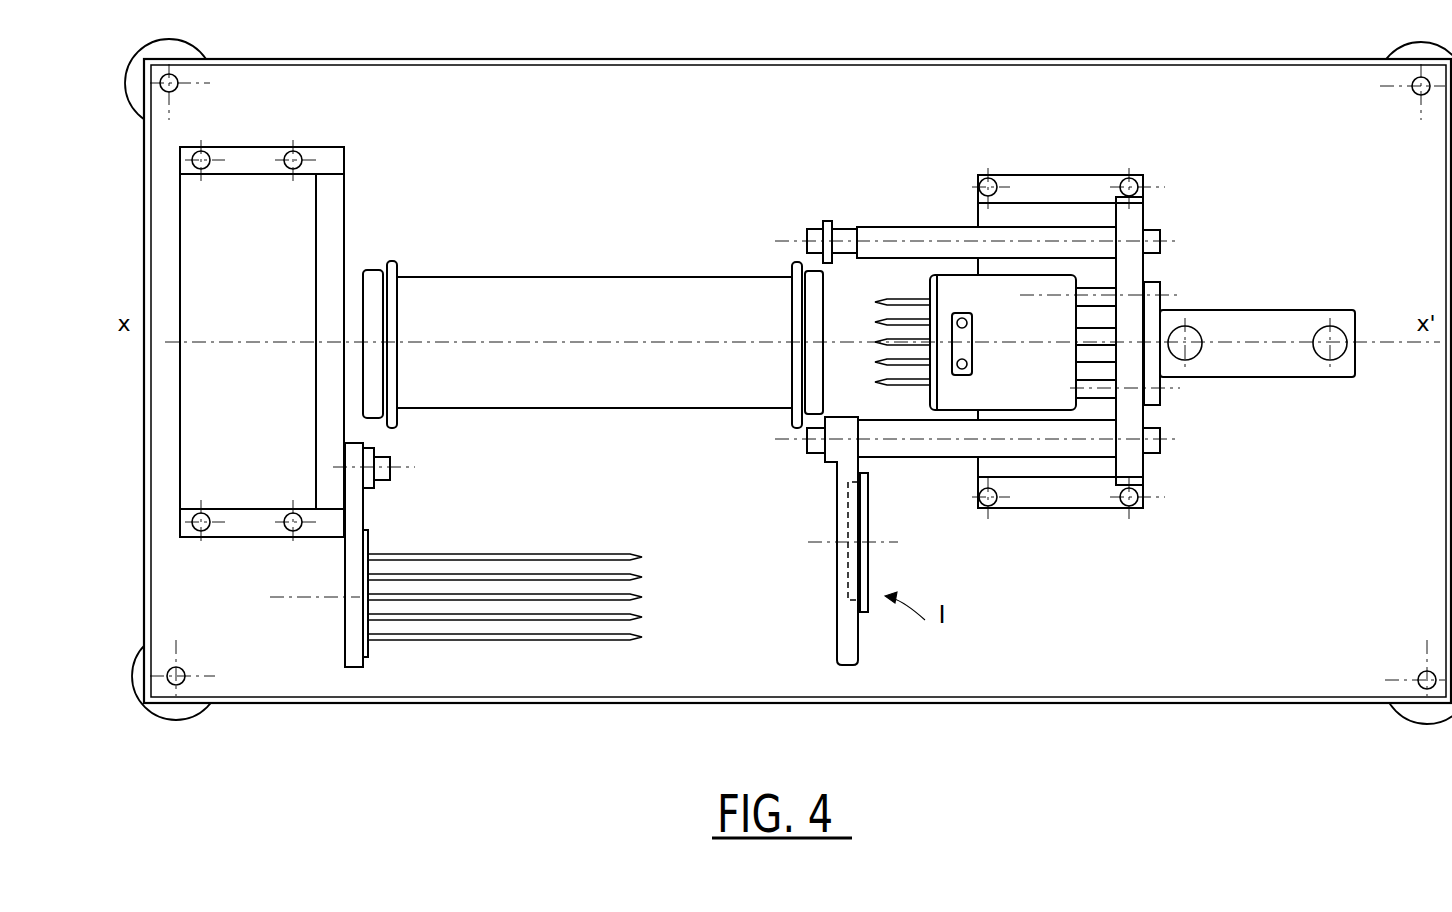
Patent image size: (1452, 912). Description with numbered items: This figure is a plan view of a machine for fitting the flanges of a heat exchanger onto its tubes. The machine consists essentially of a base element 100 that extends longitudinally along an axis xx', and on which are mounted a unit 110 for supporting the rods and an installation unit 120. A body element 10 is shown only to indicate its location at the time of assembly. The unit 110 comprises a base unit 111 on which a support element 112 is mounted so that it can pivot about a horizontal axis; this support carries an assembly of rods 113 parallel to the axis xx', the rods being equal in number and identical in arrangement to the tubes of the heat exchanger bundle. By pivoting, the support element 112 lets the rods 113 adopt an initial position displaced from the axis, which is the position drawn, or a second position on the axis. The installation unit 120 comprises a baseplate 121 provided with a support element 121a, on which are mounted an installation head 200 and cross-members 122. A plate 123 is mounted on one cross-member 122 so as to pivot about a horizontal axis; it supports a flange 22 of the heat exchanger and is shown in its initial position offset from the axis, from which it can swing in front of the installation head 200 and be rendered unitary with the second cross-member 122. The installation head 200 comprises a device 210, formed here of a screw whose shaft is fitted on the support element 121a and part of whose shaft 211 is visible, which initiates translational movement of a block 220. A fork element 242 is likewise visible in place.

The base element 100 is at (608, 103).
The body element 10 is at (601, 272).
The unit for supporting the rods 110 is at (311, 138).
The base unit 111 is at (231, 304).
The support element 112 is at (356, 574).
The rods 113 is at (540, 598).
The installation unit 120 is at (1010, 140).
The baseplate 121 is at (1070, 217).
The support element 121a is at (1140, 220).
The cross-members 122 is at (905, 212).
The support element or plate 123 is at (848, 638).
The flange 22 is at (862, 520).
The installation head 200 is at (1207, 296).
The device for initiating movement 210 is at (1257, 369).
The shaft 211 is at (1075, 372).
The block 220 is at (1017, 377).
The fork element 242 is at (968, 330).